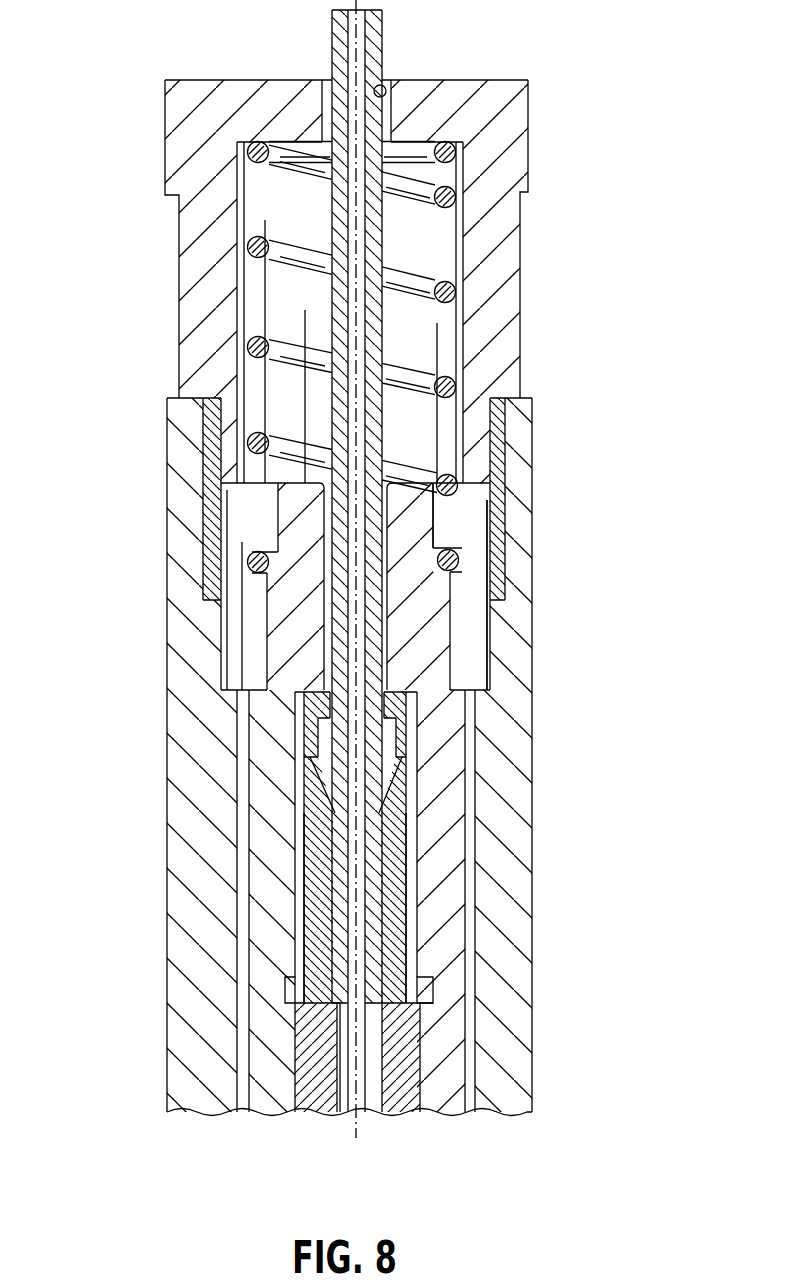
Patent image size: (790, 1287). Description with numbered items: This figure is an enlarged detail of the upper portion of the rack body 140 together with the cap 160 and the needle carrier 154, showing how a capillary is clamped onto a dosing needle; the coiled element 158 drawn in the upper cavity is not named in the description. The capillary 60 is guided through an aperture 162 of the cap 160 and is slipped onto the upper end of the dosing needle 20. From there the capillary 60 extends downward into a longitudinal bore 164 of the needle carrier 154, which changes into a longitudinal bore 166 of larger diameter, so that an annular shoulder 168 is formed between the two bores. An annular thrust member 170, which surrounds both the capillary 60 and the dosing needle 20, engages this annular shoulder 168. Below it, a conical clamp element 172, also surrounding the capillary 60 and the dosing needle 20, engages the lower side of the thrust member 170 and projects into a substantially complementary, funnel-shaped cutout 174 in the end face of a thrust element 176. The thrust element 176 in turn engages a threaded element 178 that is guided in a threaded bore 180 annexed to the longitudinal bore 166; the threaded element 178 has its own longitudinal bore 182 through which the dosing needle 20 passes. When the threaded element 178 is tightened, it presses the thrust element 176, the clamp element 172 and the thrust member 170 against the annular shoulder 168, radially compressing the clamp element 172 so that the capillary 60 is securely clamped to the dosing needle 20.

The dosing needle 20 is at (367, 937).
The capillary 60 is at (381, 33).
The rack body 140 is at (512, 735).
The needle carrier 154 is at (450, 885).
The coil spring 158 is at (462, 275).
The cap 160 is at (530, 148).
The aperture 162 is at (381, 85).
The longitudinal bore 164 is at (325, 625).
The longitudinal bore 166 is at (298, 727).
The annular shoulder 168 is at (305, 690).
The annular thrust member 170 is at (407, 686).
The conical clamp element 172 is at (323, 770).
The funnel-shaped cutout 174 is at (420, 785).
The thrust element 176 is at (330, 912).
The threaded element 178 is at (400, 1062).
The threaded bore 180 is at (413, 1103).
The longitudinal bore 182 is at (330, 1058).